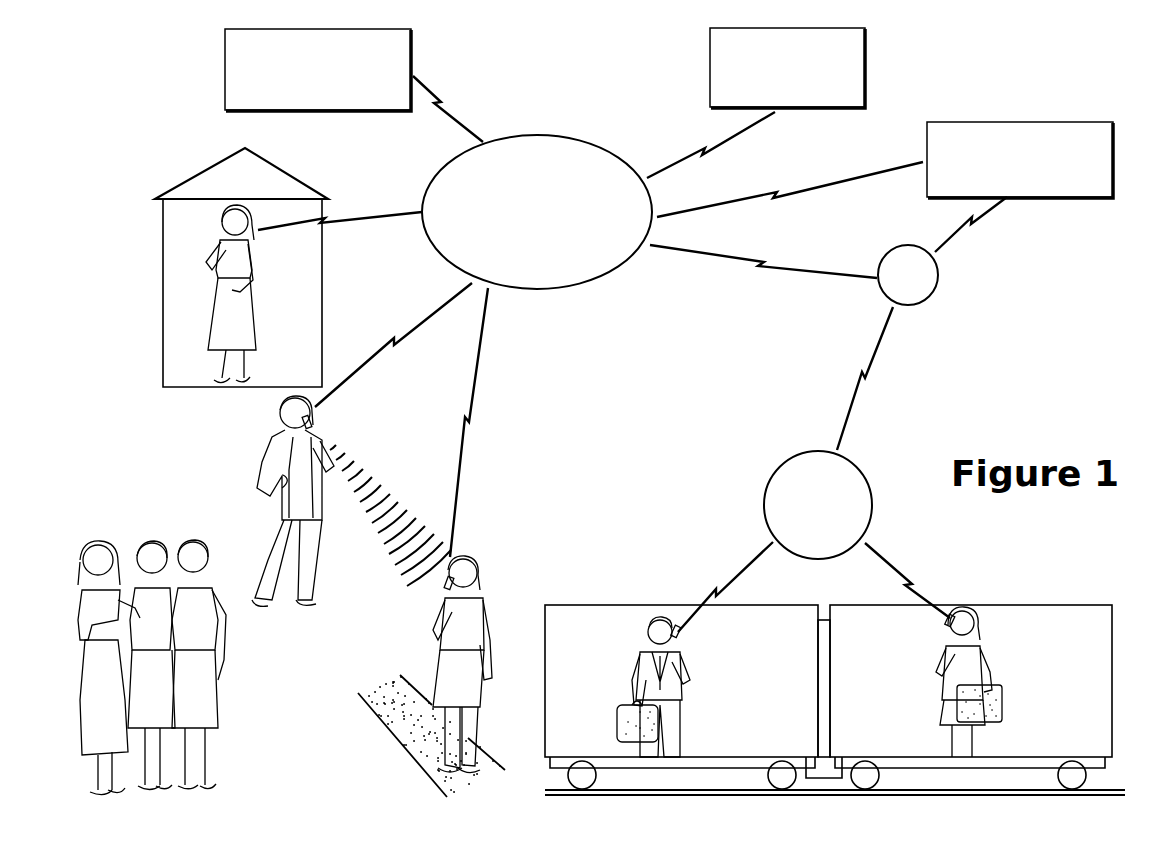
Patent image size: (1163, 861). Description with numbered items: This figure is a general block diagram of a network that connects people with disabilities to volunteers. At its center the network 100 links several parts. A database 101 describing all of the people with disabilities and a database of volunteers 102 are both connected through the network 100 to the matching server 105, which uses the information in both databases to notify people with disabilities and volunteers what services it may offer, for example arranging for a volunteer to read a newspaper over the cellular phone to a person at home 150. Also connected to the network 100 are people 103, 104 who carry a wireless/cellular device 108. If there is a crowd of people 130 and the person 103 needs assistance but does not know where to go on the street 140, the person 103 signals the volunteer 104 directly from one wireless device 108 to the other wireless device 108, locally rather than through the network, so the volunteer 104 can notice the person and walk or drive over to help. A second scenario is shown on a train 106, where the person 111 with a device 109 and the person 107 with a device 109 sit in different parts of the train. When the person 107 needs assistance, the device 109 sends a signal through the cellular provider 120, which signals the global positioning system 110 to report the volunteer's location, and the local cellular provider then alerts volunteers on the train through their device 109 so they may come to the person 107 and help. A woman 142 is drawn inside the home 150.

The network 100 is at (566, 135).
The database of people with disabilities 101 is at (225, 72).
The database of volunteers 102 is at (867, 65).
The person needing assistance 103 is at (241, 462).
The volunteer 104 is at (502, 597).
The matching server 105 is at (1022, 121).
The train 106 is at (1043, 593).
The person in need of assistance 107 is at (1018, 683).
The wireless/cellular device 108 is at (312, 425).
The device 109 is at (674, 603).
The global positioning system 110 is at (880, 256).
The person 111 is at (618, 680).
The cellular provider 120 is at (788, 457).
The crowd of people 130 is at (153, 520).
The street 140 is at (390, 695).
The person at home 142 is at (268, 320).
The home 150 is at (180, 186).